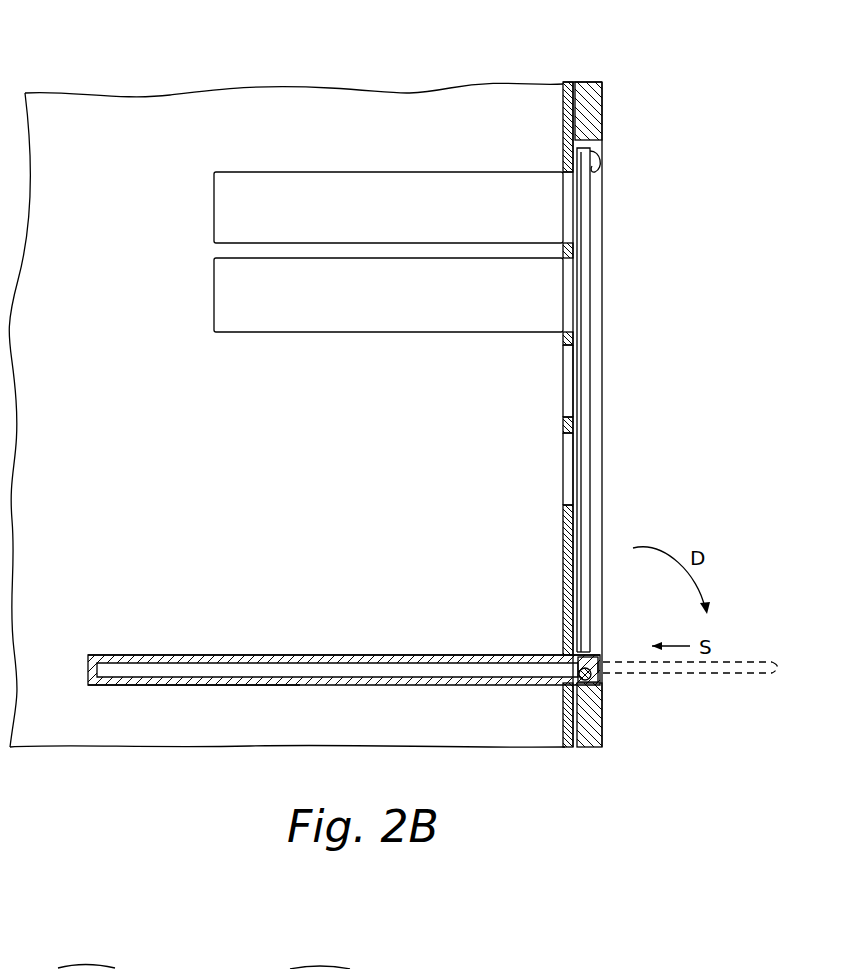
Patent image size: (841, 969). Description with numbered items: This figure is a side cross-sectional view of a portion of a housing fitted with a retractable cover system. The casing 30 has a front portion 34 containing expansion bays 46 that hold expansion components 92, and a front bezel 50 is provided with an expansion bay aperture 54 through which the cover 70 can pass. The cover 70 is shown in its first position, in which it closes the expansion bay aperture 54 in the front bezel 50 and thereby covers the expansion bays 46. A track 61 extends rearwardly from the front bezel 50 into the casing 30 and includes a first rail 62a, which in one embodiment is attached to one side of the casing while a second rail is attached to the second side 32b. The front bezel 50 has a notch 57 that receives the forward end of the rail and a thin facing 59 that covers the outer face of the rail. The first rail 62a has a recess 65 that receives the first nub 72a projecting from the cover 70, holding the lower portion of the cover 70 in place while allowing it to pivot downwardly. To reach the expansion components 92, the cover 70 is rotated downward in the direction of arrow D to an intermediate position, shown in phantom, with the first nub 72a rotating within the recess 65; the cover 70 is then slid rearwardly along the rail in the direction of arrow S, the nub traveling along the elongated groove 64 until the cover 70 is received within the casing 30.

The casing 30 is at (147, 68).
The second side 32b is at (119, 237).
The front portion 34 is at (563, 118).
The expansion bays 46 is at (563, 170).
The front bezel 50 is at (592, 110).
The expansion bay aperture 54 is at (598, 248).
The notch 57 is at (592, 703).
The thin facing 59 is at (600, 656).
The track 61 is at (202, 699).
The first rail 62a is at (208, 655).
The elongated grooves 64 is at (392, 660).
The recess 65 is at (592, 683).
The cover 70 is at (585, 348).
The first nub 72a is at (580, 652).
The expansion components 92 is at (257, 172).